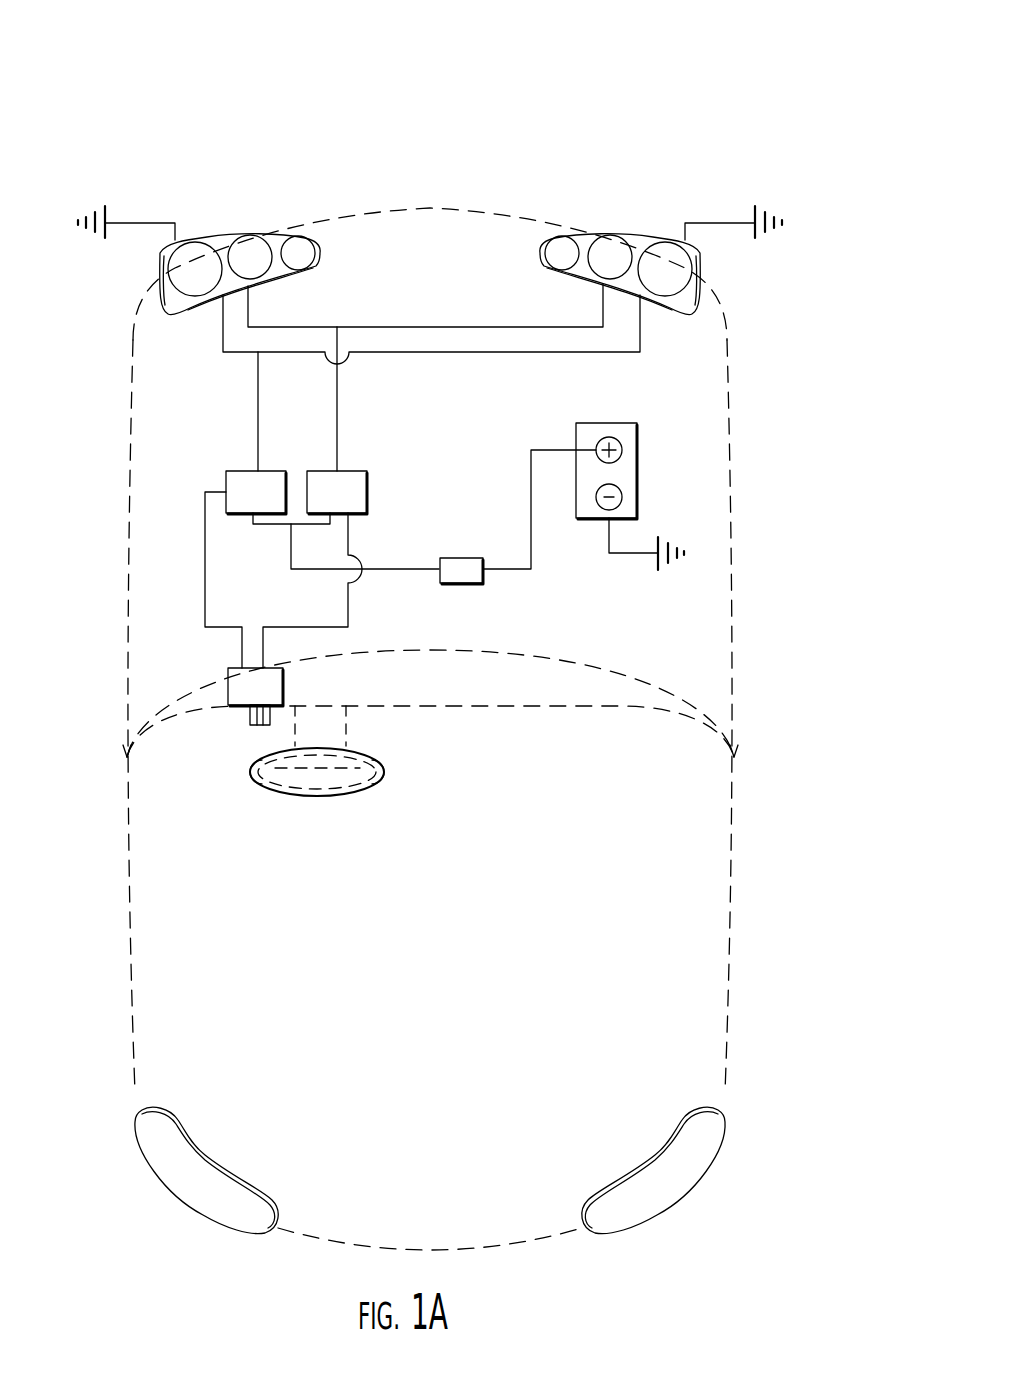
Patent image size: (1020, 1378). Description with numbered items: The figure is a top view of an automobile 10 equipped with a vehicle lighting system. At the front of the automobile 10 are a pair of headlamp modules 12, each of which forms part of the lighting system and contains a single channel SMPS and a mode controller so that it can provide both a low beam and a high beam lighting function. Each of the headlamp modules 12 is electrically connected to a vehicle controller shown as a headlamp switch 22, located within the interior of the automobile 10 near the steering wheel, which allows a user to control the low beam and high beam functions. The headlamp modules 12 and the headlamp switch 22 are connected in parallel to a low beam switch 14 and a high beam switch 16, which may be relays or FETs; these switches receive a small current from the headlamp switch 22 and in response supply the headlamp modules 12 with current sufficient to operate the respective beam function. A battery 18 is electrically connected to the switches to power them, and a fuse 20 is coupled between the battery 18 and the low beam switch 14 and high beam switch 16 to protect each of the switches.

The automobile 10 is at (744, 96).
The headlamp modules 12 is at (250, 234).
The low beam switch 14 is at (367, 485).
The high beam switch 16 is at (242, 471).
The battery 18 is at (637, 463).
The fuse 20 is at (458, 584).
The headlamp switch 22 is at (228, 688).